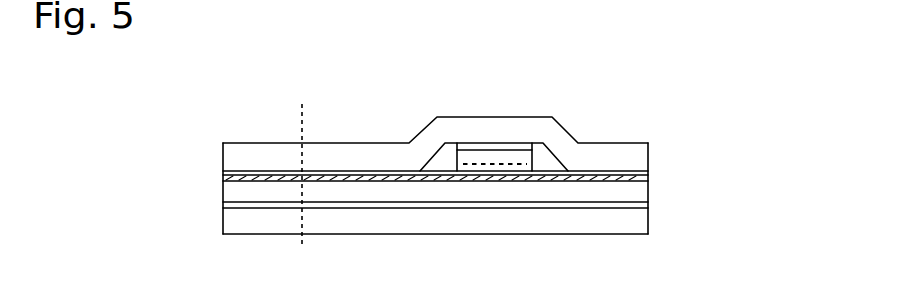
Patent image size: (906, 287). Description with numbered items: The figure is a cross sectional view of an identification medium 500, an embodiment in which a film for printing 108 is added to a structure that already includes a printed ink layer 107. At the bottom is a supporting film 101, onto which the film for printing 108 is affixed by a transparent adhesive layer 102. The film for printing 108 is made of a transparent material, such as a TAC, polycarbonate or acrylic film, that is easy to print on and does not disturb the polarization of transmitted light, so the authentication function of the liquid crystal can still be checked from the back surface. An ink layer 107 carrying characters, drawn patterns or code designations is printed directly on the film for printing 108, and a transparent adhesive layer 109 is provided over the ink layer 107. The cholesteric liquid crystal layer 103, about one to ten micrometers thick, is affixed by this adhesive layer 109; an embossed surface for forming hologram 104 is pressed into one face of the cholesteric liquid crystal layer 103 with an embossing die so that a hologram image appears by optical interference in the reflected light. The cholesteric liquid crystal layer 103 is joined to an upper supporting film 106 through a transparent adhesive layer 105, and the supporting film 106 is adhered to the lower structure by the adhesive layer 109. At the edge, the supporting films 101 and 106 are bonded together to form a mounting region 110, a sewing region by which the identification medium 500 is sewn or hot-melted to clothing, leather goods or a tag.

The supporting film 101 is at (640, 220).
The transparent adhesive layer 102 is at (485, 205).
The cholesteric liquid crystal layer 103 is at (520, 152).
The embossed surface for forming hologram 104 is at (488, 164).
The transparent adhesive layer 105 is at (467, 146).
The supporting film 106 is at (642, 158).
The ink layer 107 is at (570, 181).
The film for printing 108 is at (642, 193).
The transparent adhesive layer 109 is at (617, 173).
The mounting region 110 is at (302, 102).
The identification medium 500 is at (587, 107).